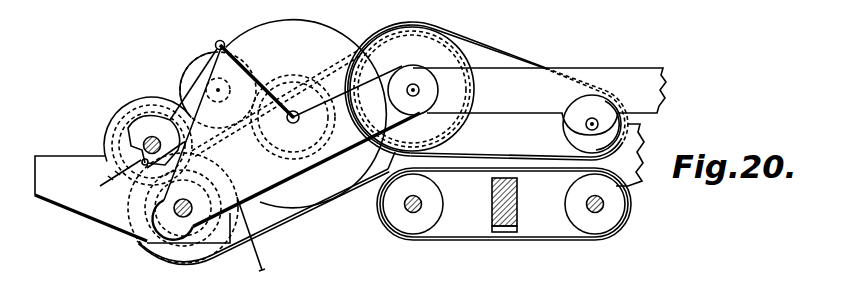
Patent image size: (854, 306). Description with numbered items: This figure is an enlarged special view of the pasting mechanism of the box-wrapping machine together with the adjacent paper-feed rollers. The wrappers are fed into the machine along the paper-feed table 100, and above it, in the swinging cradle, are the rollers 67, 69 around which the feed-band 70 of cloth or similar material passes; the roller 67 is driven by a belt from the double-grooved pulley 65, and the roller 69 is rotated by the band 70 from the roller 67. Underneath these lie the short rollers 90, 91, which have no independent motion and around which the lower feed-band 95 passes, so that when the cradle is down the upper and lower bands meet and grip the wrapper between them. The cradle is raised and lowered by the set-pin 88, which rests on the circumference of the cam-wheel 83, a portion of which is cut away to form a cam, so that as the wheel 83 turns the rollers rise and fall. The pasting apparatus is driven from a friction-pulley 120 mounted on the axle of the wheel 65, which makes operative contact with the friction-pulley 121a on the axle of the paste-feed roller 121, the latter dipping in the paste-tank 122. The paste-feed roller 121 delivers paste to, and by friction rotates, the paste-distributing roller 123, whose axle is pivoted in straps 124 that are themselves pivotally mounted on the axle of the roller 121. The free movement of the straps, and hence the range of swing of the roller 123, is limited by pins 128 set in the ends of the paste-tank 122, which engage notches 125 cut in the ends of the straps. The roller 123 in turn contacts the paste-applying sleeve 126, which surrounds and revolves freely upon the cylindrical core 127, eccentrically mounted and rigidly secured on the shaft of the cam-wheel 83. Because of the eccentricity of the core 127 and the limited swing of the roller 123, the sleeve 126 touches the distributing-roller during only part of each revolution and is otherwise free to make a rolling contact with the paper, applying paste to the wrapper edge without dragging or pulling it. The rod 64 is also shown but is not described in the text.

The rod 64 is at (263, 266).
The double-grooved pulley 65 is at (193, 252).
The roller 67 is at (436, 126).
The roller 69 is at (563, 129).
The feed-band 70 is at (520, 60).
The cam-wheel 83 is at (342, 32).
The set-pin 88 is at (223, 41).
The short roller 90 is at (432, 210).
The short roller 91 is at (565, 209).
The feed-band 95 is at (518, 190).
The paper-feed table 100 is at (382, 176).
The friction-pulley 120 is at (154, 229).
The paste-feed roller 121 is at (120, 112).
The friction-pulley 121a is at (116, 130).
The paste-tank 122 is at (95, 156).
The paste-distributing roller 123 is at (185, 70).
The strap 124 is at (173, 94).
The notch 125 is at (106, 177).
The paste-applying roller sleeve 126 is at (271, 85).
The core 127 is at (287, 99).
The pin 128 is at (142, 170).